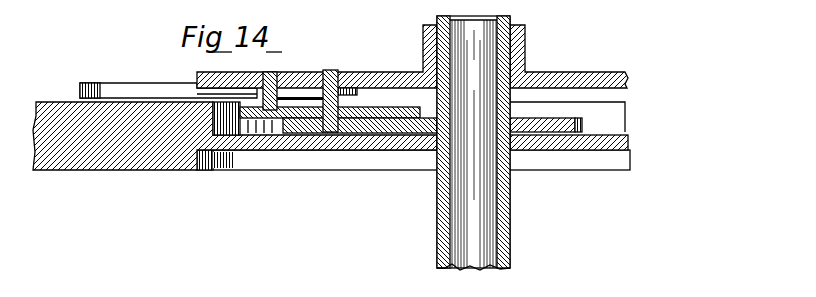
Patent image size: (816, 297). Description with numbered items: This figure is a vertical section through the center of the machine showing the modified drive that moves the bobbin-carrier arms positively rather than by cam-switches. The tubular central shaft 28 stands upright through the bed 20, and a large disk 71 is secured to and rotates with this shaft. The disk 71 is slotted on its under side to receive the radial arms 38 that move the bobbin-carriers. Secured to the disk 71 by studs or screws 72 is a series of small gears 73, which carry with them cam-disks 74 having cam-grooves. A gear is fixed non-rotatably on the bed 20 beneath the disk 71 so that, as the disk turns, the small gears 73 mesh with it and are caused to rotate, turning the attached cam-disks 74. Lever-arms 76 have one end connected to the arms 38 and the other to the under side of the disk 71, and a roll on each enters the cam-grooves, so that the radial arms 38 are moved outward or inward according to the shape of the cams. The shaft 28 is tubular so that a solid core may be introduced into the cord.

The bed 20 is at (122, 160).
The arms 38 is at (123, 89).
The disk 71 is at (572, 73).
The studs or screws 72 is at (333, 70).
The small gears 73 is at (357, 133).
The cam-disks 74 is at (386, 109).
The lever-arms 76 is at (694, 92).
The central shaft 28 is at (478, 204).